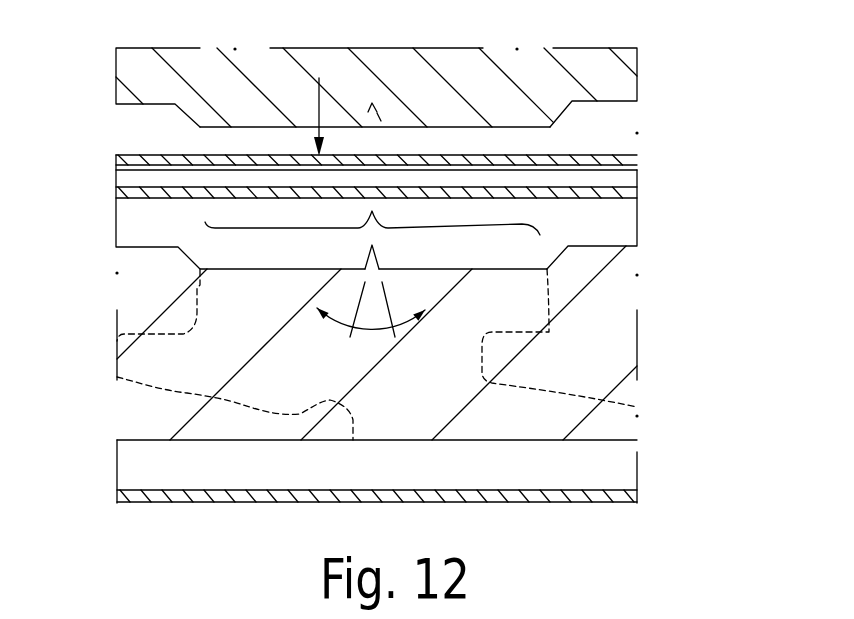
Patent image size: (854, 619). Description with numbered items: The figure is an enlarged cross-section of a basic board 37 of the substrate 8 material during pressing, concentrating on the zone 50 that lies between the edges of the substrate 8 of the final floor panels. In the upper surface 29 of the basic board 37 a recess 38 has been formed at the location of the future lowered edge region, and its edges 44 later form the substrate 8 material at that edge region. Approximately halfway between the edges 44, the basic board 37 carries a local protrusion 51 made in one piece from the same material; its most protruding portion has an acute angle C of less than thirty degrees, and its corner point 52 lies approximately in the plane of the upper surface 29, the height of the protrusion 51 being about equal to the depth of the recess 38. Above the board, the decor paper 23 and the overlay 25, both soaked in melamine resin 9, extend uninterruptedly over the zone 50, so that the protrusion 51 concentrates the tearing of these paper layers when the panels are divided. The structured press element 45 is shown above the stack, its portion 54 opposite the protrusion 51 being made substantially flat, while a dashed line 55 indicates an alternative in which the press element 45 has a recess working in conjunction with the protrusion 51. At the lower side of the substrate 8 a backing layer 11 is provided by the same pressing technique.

The structured press element 45 is at (404, 77).
The portion of the press element 54 is at (396, 127).
The dashed line 55 is at (364, 119).
The overlay 25 is at (618, 160).
The decor paper 23 is at (618, 192).
The melamine resin 9 is at (147, 192).
The upper surface of the basic board 29 is at (137, 247).
The zone 50 is at (375, 212).
The protrusion 51 is at (377, 260).
The corner point 52 is at (371, 250).
The acute angle C is at (317, 308).
The recess 38 is at (263, 253).
The edge of the recess 44 is at (197, 257).
The substrate 8 is at (125, 410).
The basic board 37 is at (428, 390).
The backing layer 11 is at (260, 496).